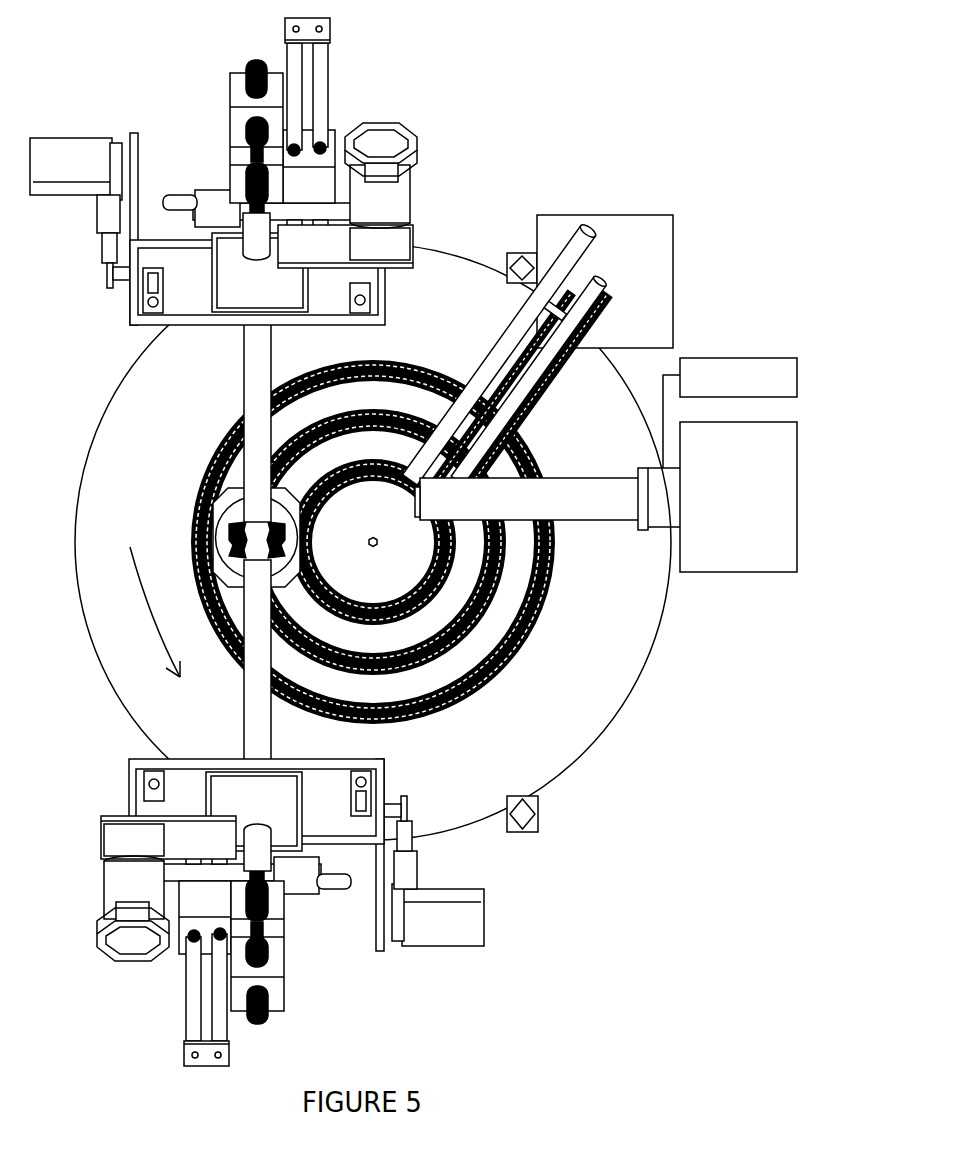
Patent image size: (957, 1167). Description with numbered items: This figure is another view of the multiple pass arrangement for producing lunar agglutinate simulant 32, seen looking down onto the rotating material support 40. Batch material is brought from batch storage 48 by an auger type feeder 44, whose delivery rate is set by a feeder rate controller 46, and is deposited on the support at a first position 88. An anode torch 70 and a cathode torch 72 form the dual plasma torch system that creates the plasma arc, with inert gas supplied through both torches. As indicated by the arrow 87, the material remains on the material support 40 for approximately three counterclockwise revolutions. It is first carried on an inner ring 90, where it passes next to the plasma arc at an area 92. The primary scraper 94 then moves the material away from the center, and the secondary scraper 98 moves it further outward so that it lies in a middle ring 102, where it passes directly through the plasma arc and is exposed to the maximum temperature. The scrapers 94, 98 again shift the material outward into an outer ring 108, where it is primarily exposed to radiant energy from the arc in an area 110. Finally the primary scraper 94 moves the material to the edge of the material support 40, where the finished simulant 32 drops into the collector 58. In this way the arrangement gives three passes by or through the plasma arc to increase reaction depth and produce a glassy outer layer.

The lunar agglutinate simulant 32 is at (556, 583).
The material support 40 is at (613, 685).
The feeder 44 is at (548, 487).
The feeder rate controller 46 is at (707, 358).
The batch storage 48 is at (702, 572).
The collector 58 is at (674, 253).
The anode torch 70 is at (250, 373).
The cathode torch 72 is at (245, 717).
The arrow 87 is at (143, 584).
The first position 88 is at (414, 507).
The inner ring 90 is at (333, 493).
The area 92 is at (304, 538).
The primary scraper 94 is at (604, 283).
The secondary scraper 98 is at (587, 233).
The middle ring 102 is at (447, 667).
The outer ring 108 is at (237, 432).
The area 110 is at (200, 490).